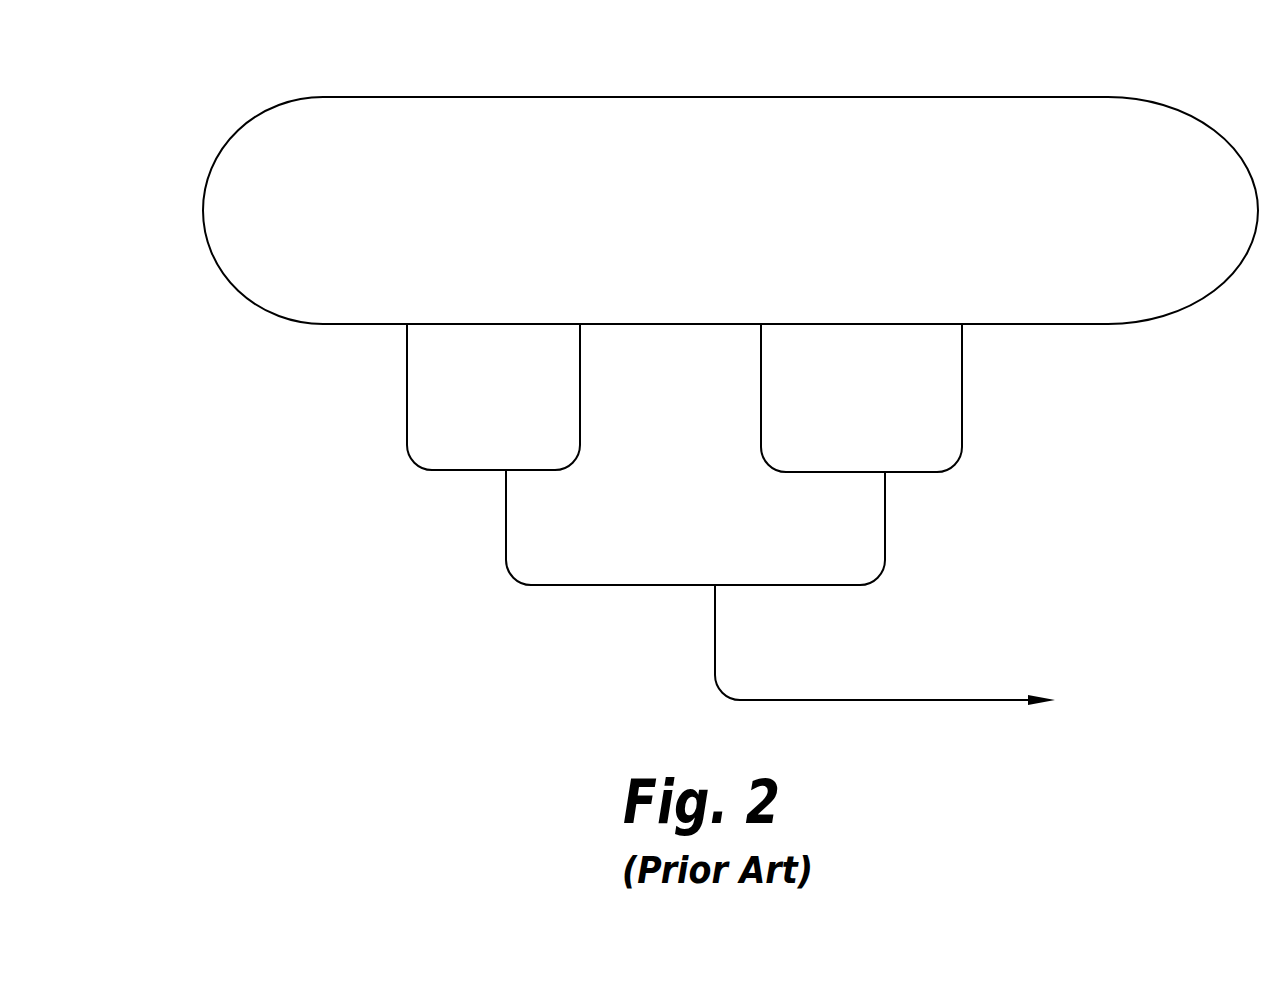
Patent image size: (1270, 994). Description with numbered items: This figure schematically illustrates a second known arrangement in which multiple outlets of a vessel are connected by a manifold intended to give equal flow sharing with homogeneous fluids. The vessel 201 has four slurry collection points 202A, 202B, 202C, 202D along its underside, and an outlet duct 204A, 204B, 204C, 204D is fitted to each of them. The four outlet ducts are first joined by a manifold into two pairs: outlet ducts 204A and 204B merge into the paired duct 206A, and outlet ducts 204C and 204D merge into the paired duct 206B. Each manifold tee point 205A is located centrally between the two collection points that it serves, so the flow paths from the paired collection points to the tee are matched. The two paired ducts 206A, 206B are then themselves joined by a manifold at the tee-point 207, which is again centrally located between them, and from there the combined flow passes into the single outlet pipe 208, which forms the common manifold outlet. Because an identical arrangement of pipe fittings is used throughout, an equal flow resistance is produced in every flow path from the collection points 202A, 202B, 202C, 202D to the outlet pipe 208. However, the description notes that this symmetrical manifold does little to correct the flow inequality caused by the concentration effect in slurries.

The vessel 201 is at (1110, 98).
The slurry collection point 202A is at (407, 323).
The slurry collection point 202B is at (580, 323).
The slurry collection point 202C is at (761, 323).
The slurry collection point 202D is at (962, 323).
The outlet duct 204A is at (410, 385).
The outlet duct 204B is at (583, 385).
The outlet duct 204C is at (763, 385).
The outlet duct 204D is at (965, 385).
The manifold tee point 205A is at (502, 470).
The pair of ducts 206A is at (508, 528).
The pair of ducts 206B is at (888, 528).
The tee-point 207 is at (715, 585).
The outlet pipe 208 is at (880, 700).